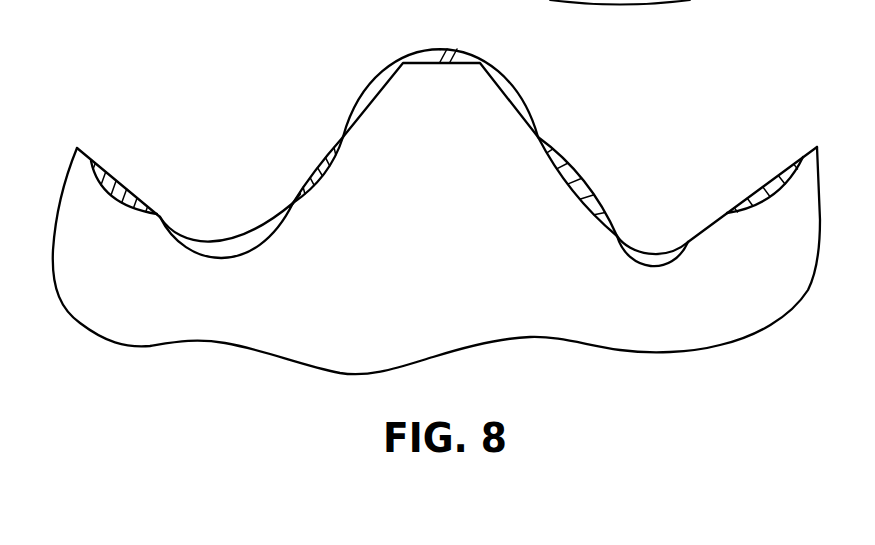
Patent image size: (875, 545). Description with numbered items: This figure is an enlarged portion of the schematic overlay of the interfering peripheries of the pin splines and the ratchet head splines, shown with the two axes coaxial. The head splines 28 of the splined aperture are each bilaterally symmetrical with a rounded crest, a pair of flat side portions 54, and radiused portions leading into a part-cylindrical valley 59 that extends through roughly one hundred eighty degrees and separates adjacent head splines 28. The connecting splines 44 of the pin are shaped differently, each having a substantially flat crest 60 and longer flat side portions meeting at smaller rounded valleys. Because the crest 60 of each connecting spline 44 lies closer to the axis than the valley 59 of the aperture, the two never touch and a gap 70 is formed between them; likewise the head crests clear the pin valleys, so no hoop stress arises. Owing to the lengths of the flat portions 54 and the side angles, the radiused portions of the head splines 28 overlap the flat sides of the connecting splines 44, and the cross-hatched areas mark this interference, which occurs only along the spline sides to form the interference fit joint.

The head spline 28 is at (661, 232).
The connecting spline 44 is at (371, 109).
The flat side portion 54 is at (297, 201).
The valley 59 is at (402, 52).
The crest 60 is at (461, 52).
The gap 70 is at (441, 53).